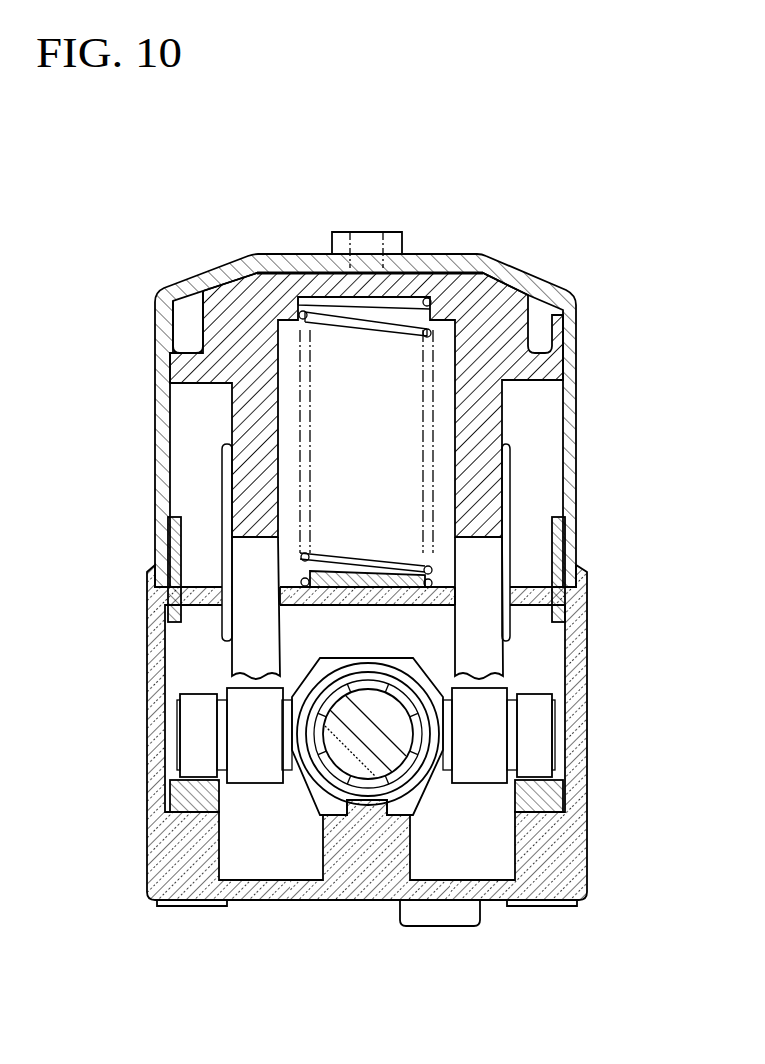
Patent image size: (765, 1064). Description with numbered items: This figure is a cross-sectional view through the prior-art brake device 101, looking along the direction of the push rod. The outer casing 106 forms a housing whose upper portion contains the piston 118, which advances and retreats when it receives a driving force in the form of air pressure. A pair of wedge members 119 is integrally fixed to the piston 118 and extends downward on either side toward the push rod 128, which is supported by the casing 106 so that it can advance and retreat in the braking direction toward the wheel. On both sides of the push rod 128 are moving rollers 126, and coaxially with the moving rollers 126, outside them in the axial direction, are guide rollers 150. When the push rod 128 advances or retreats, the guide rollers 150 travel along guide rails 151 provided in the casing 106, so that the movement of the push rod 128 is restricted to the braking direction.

The brake device 101 is at (619, 150).
The casing 106 is at (586, 678).
The piston 118 is at (283, 282).
The wedge members 119 is at (240, 415).
The moving rollers 126 is at (240, 727).
The push rod 128 is at (318, 662).
The guide rollers 150 is at (198, 746).
The guide rails 151 is at (193, 800).